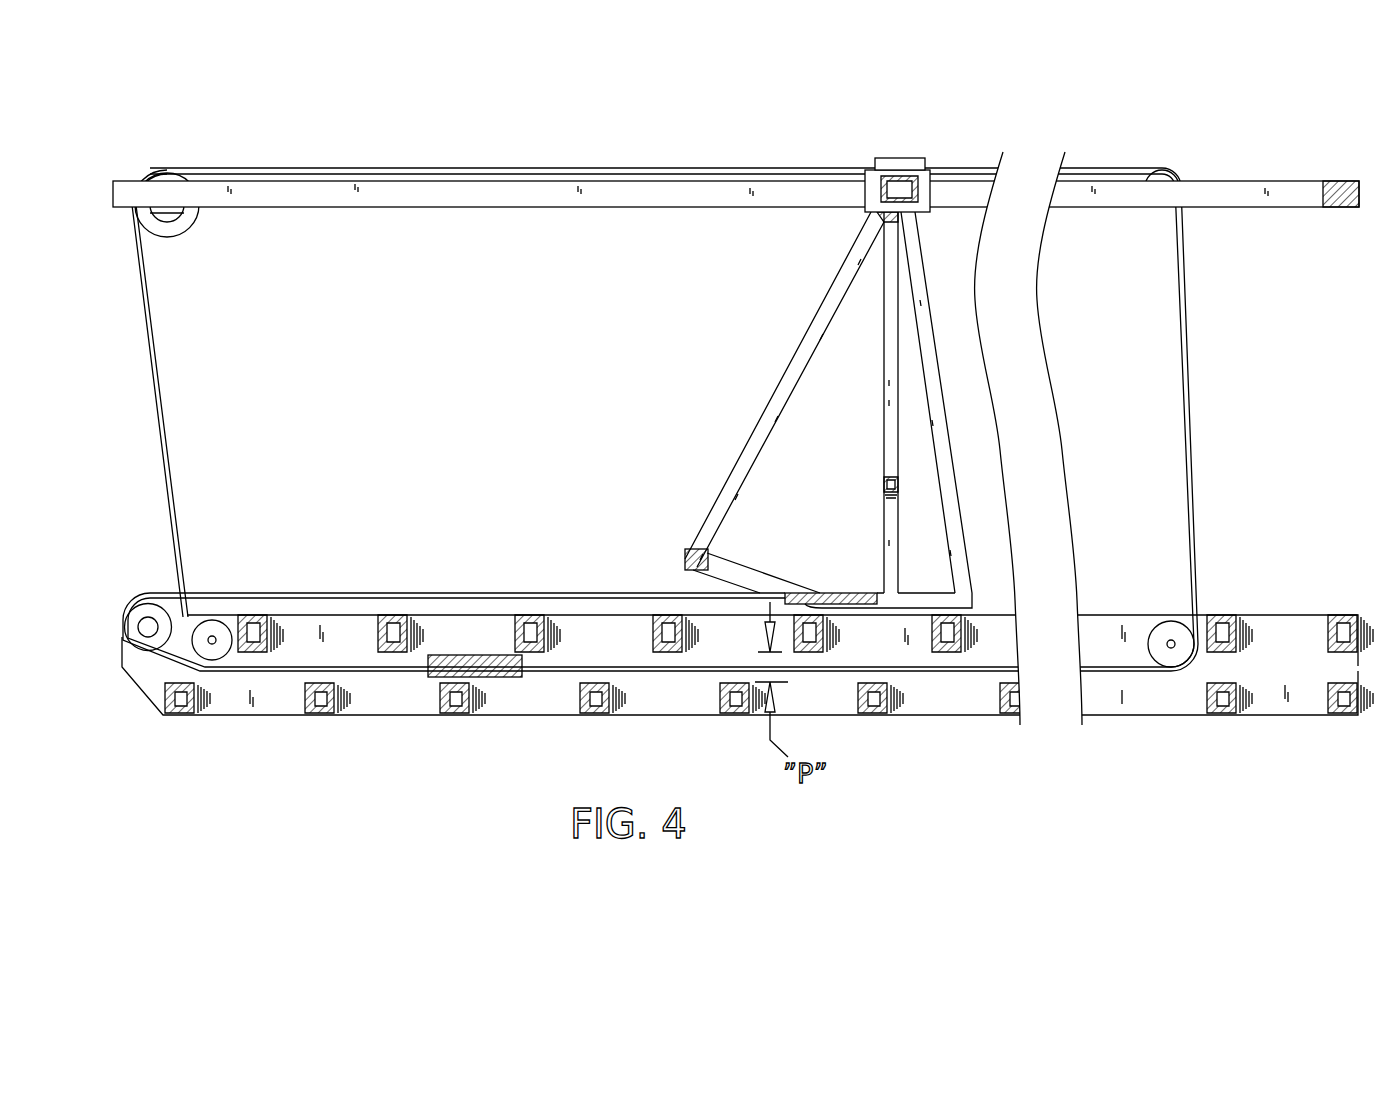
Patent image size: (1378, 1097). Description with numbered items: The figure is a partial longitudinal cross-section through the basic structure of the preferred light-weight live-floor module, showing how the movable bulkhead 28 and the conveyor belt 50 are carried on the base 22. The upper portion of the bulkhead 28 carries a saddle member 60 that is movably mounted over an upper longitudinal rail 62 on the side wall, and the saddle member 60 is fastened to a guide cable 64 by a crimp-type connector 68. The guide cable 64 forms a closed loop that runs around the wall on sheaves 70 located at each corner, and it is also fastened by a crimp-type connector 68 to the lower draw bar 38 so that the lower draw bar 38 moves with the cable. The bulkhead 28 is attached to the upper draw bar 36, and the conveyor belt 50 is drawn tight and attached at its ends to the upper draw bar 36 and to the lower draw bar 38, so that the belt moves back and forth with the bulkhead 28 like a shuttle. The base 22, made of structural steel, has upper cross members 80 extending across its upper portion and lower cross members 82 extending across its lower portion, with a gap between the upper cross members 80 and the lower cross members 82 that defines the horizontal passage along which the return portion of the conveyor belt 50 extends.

The base 22 is at (1282, 613).
The movable bulkhead 28 is at (787, 360).
The upper draw bar 36 is at (815, 593).
The lower draw bar 38 is at (482, 655).
The conveyor belt 50 is at (578, 592).
The saddle member 60 is at (910, 170).
The upper longitudinal rail 62 is at (382, 208).
The guide cable 64 is at (408, 170).
The crimp-type connector 68 is at (885, 158).
The sheave 70 is at (167, 181).
The upper cross member 80 is at (393, 616).
The lower cross member 82 is at (440, 690).